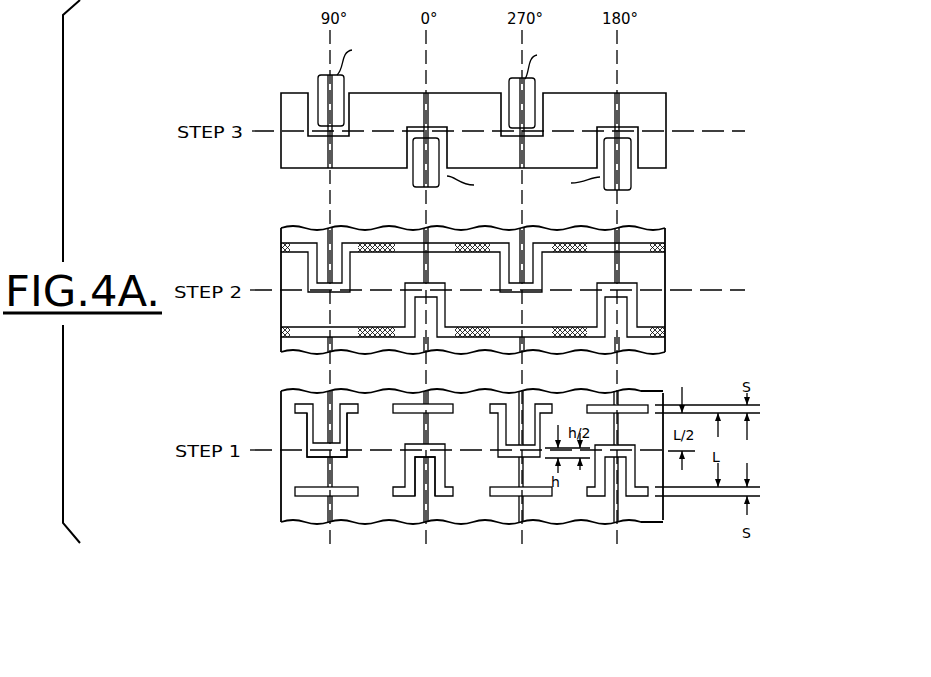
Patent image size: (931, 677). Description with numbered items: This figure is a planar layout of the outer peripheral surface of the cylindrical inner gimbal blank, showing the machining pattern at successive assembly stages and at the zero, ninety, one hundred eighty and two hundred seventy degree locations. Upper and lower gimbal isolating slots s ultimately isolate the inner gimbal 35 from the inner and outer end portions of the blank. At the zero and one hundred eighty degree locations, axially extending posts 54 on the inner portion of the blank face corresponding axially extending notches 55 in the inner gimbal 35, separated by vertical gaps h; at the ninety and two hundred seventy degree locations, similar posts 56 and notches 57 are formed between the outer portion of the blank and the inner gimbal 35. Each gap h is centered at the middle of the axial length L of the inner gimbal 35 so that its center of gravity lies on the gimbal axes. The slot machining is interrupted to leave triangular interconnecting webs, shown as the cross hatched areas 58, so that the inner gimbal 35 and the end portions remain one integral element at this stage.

The inner gimbal 35 is at (668, 107).
The axially extending posts 54 is at (415, 468).
The axially extending notches 55 is at (446, 468).
The posts 56 is at (335, 404).
The notches 57 is at (348, 428).
The cross hatched areas 58 is at (569, 245).